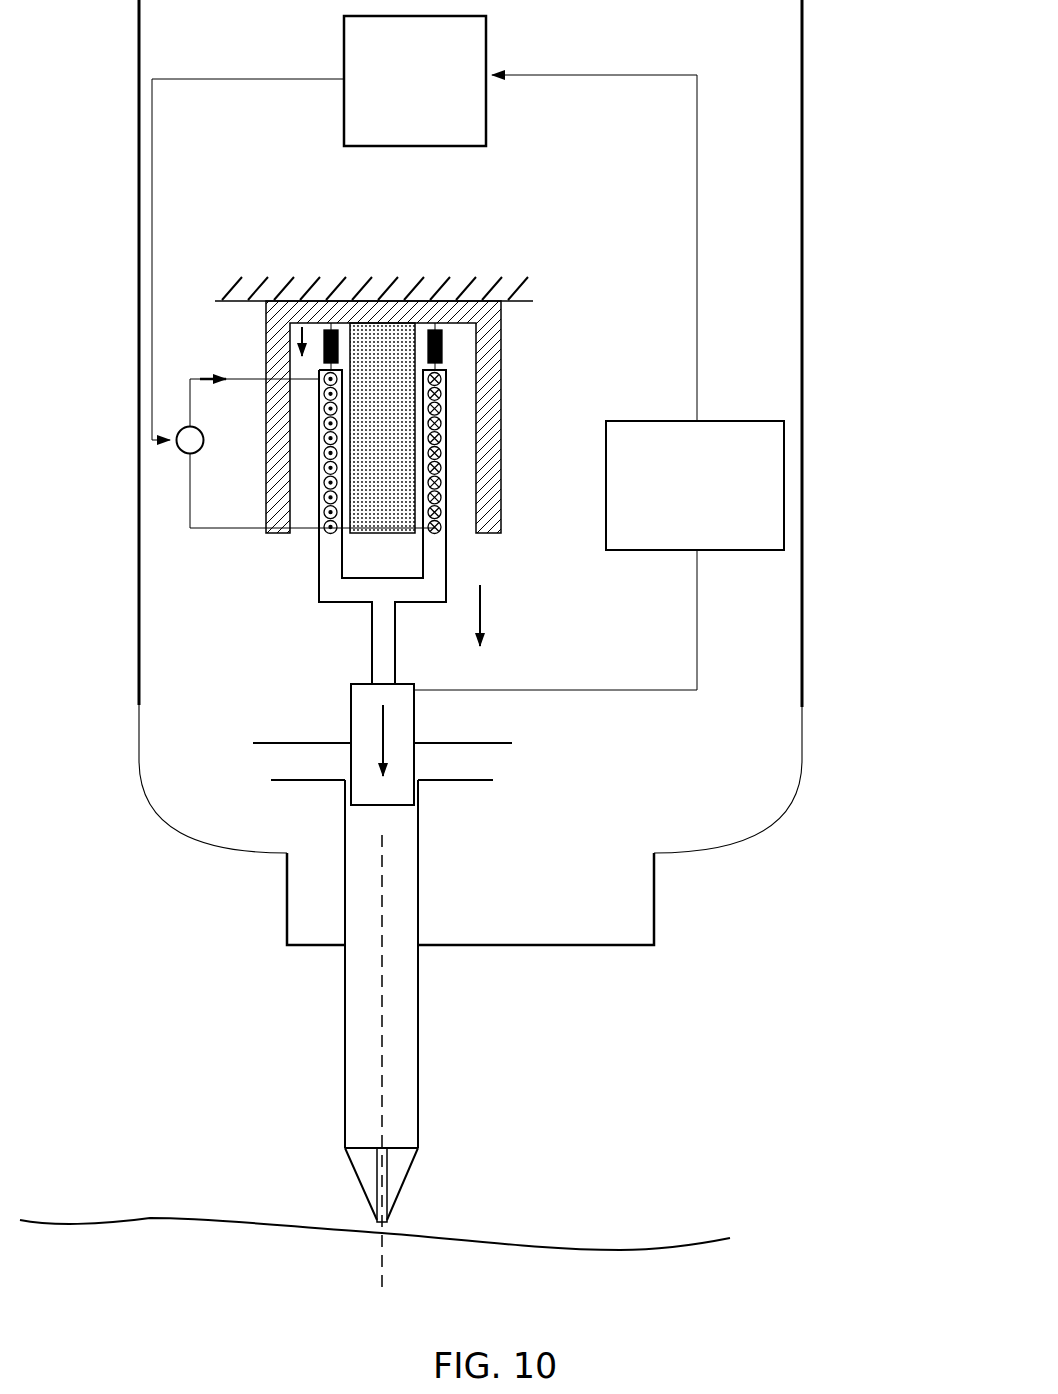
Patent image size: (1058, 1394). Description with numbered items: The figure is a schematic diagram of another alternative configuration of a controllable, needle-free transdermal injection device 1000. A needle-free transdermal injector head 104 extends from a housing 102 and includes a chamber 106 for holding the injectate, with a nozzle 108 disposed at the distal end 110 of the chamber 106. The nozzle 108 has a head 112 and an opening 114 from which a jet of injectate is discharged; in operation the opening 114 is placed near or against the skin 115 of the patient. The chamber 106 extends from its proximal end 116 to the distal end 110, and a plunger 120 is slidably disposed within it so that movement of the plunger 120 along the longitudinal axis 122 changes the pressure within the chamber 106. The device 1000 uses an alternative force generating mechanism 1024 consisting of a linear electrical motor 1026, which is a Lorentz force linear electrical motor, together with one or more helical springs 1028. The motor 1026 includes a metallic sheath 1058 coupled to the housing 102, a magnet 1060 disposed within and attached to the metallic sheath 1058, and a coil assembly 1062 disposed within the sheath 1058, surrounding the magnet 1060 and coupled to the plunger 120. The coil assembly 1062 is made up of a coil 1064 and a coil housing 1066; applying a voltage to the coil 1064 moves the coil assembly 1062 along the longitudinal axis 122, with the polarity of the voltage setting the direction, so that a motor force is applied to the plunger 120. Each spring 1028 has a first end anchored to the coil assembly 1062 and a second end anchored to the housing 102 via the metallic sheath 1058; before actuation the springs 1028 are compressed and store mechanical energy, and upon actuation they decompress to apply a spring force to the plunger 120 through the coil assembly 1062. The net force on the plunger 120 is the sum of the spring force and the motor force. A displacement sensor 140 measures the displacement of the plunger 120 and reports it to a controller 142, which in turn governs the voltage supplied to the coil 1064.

The controllable, needle-free transdermal injection device 1000 is at (174, 950).
The housing 102 is at (802, 768).
The needle-free transdermal injector head 104 is at (424, 1037).
The chamber 106 is at (405, 990).
The nozzle 108 is at (415, 1155).
The distal end 110 is at (345, 1128).
The head 112 is at (381, 1182).
The opening 114 is at (386, 1222).
The skin 115 is at (235, 1223).
The proximal end 116 is at (345, 806).
The plunger 120 is at (351, 722).
The longitudinal axis 122 is at (385, 1064).
The displacement sensor 140 is at (733, 551).
The controller 142 is at (487, 43).
The alternative force generating mechanism 1024 is at (477, 363).
The linear electrical motor 1026 is at (474, 413).
The helical springs 1028 is at (442, 355).
The metallic sheath 1058 is at (490, 355).
The magnet 1060 is at (397, 325).
The coil assembly 1062 is at (305, 527).
The coil 1064 is at (447, 527).
The coil housing 1066 is at (319, 575).